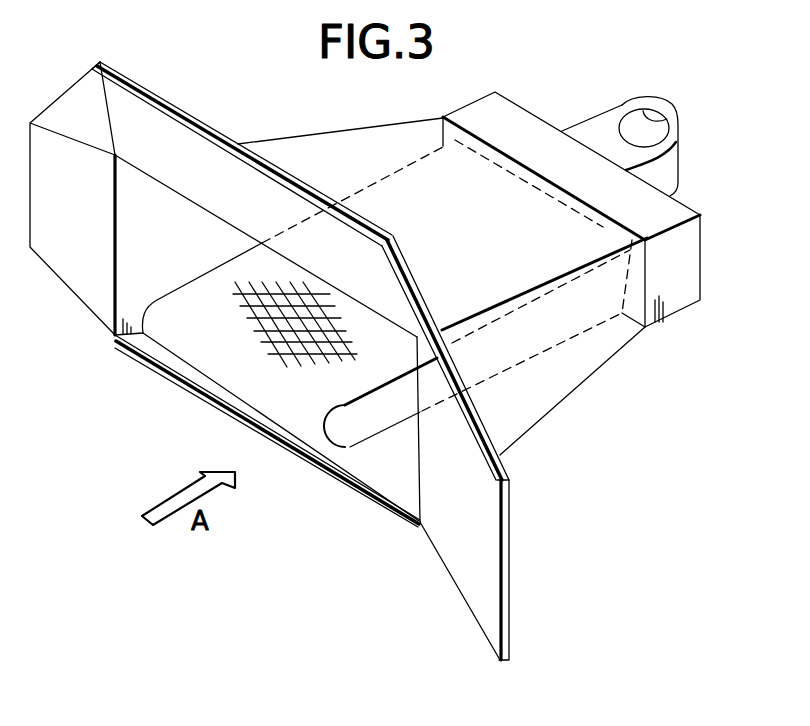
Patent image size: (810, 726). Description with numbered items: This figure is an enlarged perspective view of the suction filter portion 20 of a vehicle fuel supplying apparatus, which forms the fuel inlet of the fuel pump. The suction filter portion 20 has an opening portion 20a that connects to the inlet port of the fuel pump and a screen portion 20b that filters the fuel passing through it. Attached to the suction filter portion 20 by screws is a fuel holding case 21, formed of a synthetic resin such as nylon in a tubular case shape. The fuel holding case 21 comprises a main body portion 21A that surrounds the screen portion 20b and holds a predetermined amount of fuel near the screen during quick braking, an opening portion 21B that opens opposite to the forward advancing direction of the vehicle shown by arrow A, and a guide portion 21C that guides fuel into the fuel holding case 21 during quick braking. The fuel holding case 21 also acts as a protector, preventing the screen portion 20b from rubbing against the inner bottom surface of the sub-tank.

The suction filter portion 20 is at (731, 346).
The opening portion 20a is at (670, 119).
The screen portion 20b is at (193, 343).
The fuel holding case 21 is at (368, 361).
The main body portion 21A is at (537, 424).
The opening portion 21B is at (360, 497).
The guide portion 21C is at (508, 578).